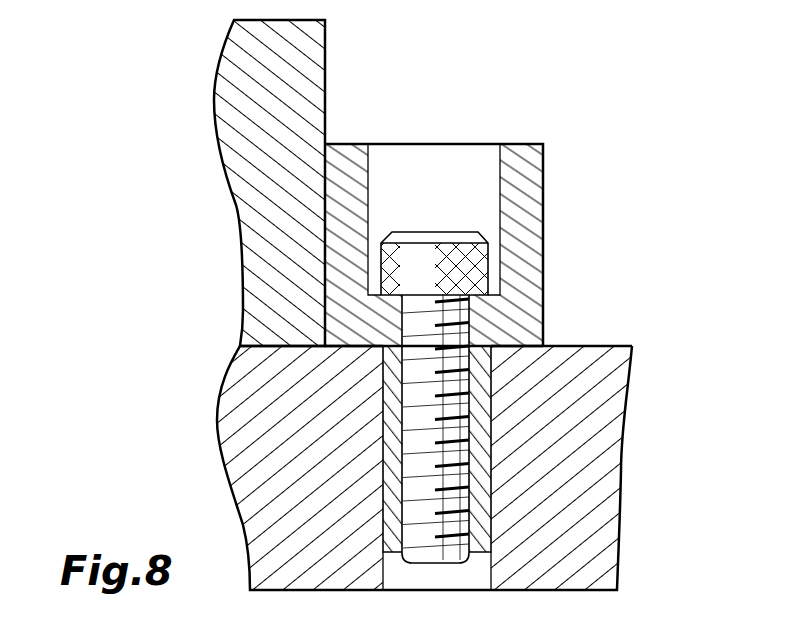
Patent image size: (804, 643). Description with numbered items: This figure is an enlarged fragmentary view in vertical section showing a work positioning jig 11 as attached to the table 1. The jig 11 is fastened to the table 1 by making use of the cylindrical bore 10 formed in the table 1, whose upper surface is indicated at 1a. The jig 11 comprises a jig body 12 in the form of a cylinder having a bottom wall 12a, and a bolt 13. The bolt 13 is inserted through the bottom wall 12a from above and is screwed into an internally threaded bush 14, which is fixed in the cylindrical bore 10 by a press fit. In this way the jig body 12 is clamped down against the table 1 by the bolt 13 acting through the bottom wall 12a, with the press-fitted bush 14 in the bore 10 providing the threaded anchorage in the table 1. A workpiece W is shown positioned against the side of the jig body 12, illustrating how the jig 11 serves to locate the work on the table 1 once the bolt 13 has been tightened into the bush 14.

The workpiece W is at (229, 68).
The table 1 is at (487, 425).
The top surface of base block 1a is at (603, 347).
The cylindrical bore 10 is at (483, 563).
The work positioning jig 11 is at (423, 323).
The jig body 12 is at (384, 245).
The bottom wall 12a is at (385, 315).
The bolt 13 is at (418, 249).
The internally threaded bush 14 is at (493, 450).